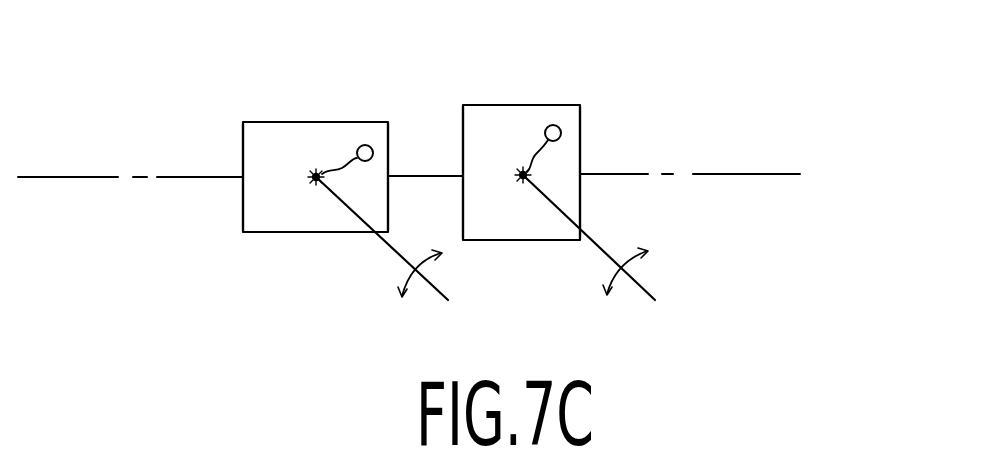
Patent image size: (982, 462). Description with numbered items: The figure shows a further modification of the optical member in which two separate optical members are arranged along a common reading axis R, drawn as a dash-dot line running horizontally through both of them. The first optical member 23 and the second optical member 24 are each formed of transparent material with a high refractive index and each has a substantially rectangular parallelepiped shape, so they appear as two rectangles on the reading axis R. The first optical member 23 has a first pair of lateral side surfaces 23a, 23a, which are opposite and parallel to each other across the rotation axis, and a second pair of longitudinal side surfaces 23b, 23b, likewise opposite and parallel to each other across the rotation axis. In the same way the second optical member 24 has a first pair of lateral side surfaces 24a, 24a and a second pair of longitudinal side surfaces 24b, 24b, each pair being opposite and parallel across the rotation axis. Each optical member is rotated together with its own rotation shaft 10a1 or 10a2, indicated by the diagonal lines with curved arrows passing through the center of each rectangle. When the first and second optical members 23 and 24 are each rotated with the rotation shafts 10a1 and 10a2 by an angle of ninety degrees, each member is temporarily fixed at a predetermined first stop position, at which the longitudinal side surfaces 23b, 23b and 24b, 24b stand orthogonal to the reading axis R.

The first optical member 23 is at (334, 123).
The lateral side surfaces 23a is at (388, 148).
The longitudinal side surfaces 23b is at (291, 127).
The second optical member 24 is at (538, 106).
The lateral side surfaces 24a is at (503, 105).
The longitudinal side surfaces 24b is at (463, 140).
The rotation shaft 10a1 is at (395, 258).
The rotation shaft 10a2 is at (643, 292).
The reading axis R is at (760, 167).